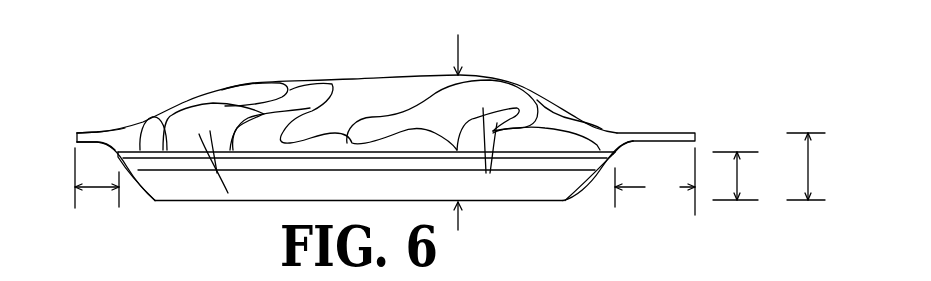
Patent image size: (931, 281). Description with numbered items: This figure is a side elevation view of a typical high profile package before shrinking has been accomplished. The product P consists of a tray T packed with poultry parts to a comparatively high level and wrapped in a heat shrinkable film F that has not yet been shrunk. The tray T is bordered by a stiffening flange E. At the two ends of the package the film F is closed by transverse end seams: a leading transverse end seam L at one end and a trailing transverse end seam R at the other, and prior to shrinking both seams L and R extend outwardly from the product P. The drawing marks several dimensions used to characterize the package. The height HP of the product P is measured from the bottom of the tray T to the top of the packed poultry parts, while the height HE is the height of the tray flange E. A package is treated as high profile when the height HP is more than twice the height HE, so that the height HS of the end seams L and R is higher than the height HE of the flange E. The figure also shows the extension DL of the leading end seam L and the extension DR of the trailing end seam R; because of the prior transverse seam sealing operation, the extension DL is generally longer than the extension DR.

The product P is at (524, 57).
The tray T is at (193, 191).
The heat shrinkable film F is at (577, 119).
The trailing transverse end seam R is at (77, 132).
The leading transverse end seam L is at (696, 133).
The stiffening flange E is at (617, 147).
The height of product HP is at (458, 43).
The extension of trailing end seam DR is at (96, 190).
The extension of leading end seam DL is at (655, 181).
The height of tray flange HE is at (735, 176).
The height of end seams HS is at (806, 166).